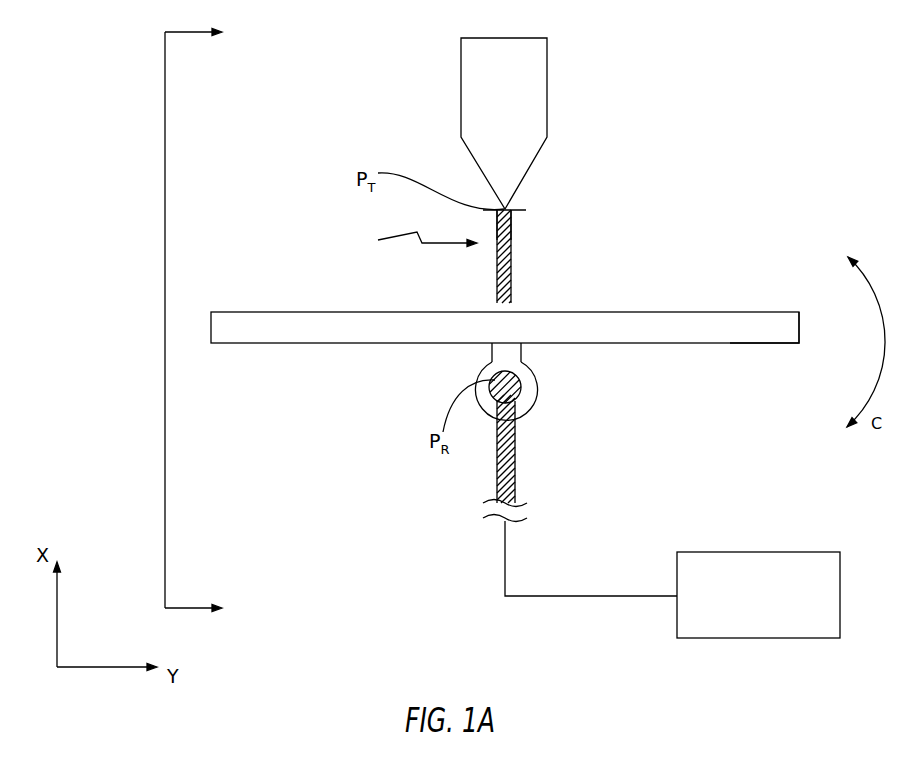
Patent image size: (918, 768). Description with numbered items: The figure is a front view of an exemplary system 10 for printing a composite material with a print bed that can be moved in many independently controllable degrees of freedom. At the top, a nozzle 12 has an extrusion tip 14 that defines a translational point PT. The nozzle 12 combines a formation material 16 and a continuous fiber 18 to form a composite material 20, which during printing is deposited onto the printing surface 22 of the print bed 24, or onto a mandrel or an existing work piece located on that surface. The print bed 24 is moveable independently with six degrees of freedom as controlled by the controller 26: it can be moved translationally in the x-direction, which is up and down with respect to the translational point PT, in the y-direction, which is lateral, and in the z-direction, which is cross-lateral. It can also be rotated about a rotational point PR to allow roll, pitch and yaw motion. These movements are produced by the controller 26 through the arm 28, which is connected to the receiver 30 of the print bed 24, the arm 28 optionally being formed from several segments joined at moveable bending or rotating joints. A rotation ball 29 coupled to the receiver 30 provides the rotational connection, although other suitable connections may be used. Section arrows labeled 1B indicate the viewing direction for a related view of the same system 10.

The system 10 is at (766, 144).
The nozzle 12 is at (528, 62).
The extrusion tip 14 is at (509, 207).
The formation material 16 is at (509, 233).
The continuous fiber 18 is at (511, 248).
The composite material 20 is at (414, 244).
The printing surface 22 is at (637, 302).
The print bed 24 is at (744, 332).
The controller 26 is at (770, 608).
The arm 28 is at (515, 447).
The rotation ball 29 is at (514, 414).
The receiver 30 is at (530, 385).
The section view indicator 1B is at (209, 331).